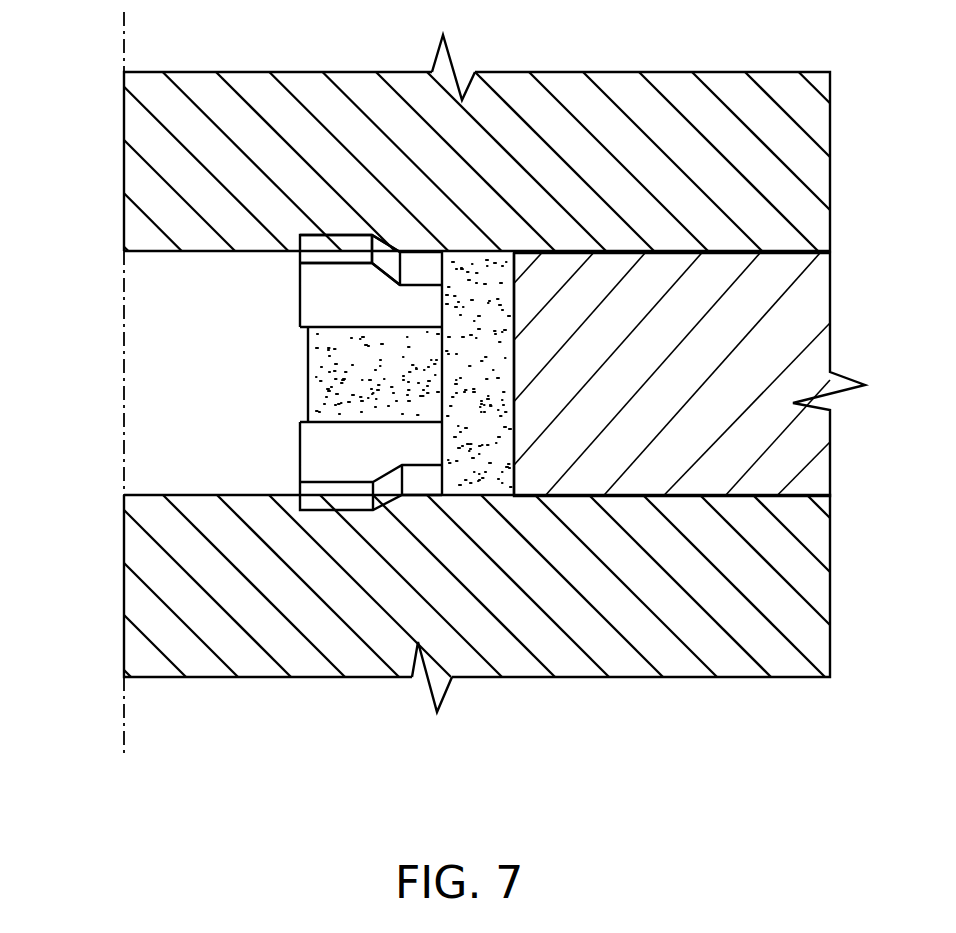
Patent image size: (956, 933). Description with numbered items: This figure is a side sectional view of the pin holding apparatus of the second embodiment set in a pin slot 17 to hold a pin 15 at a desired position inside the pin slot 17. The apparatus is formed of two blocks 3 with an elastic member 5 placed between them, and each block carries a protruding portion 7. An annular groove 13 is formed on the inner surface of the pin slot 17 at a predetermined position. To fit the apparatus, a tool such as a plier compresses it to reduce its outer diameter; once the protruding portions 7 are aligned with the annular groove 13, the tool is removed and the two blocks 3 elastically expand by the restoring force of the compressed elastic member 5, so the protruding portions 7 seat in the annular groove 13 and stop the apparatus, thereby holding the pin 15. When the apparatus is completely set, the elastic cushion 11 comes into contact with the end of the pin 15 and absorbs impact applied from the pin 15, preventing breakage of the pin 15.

The block 3 is at (422, 262).
The elastic member 5 is at (316, 368).
The protruding portion 7 is at (350, 457).
The elastic cushion 11 is at (500, 480).
The annular groove 13 is at (340, 238).
The pin 15 is at (810, 302).
The pin slot 17 is at (152, 430).